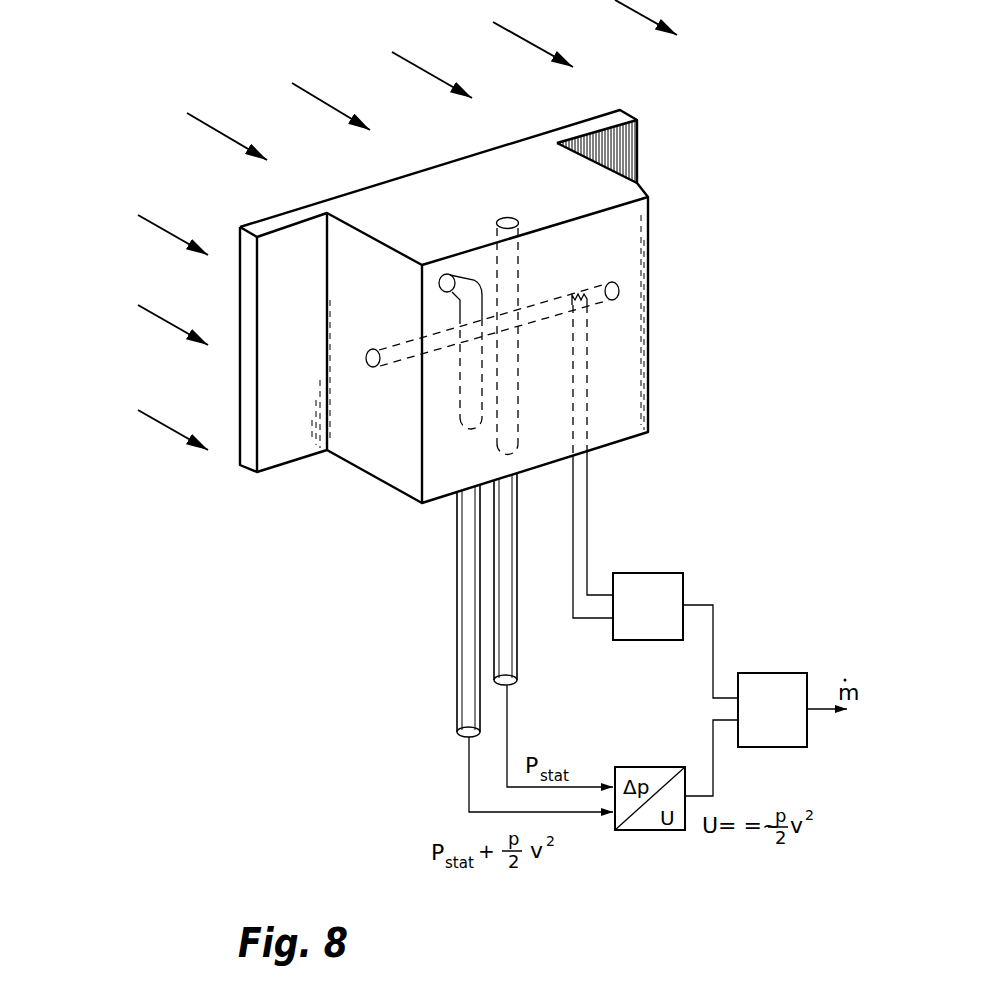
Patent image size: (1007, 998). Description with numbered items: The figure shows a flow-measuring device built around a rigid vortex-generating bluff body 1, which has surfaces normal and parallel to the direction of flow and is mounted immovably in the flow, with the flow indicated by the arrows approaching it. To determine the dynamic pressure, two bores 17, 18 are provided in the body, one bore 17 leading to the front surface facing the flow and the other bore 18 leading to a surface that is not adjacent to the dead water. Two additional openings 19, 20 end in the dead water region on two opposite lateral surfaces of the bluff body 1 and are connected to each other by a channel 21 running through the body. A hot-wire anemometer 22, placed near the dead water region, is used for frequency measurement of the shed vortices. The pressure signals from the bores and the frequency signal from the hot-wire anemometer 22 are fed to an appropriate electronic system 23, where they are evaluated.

The vortex-generating bluff body 1 is at (612, 118).
The bore 17 is at (438, 281).
The bore 18 is at (505, 222).
The opening 19 is at (374, 367).
The opening 20 is at (620, 288).
The channel 21 is at (433, 345).
The hot-wire anemometer 22 is at (592, 302).
The electronic system 23 is at (777, 673).